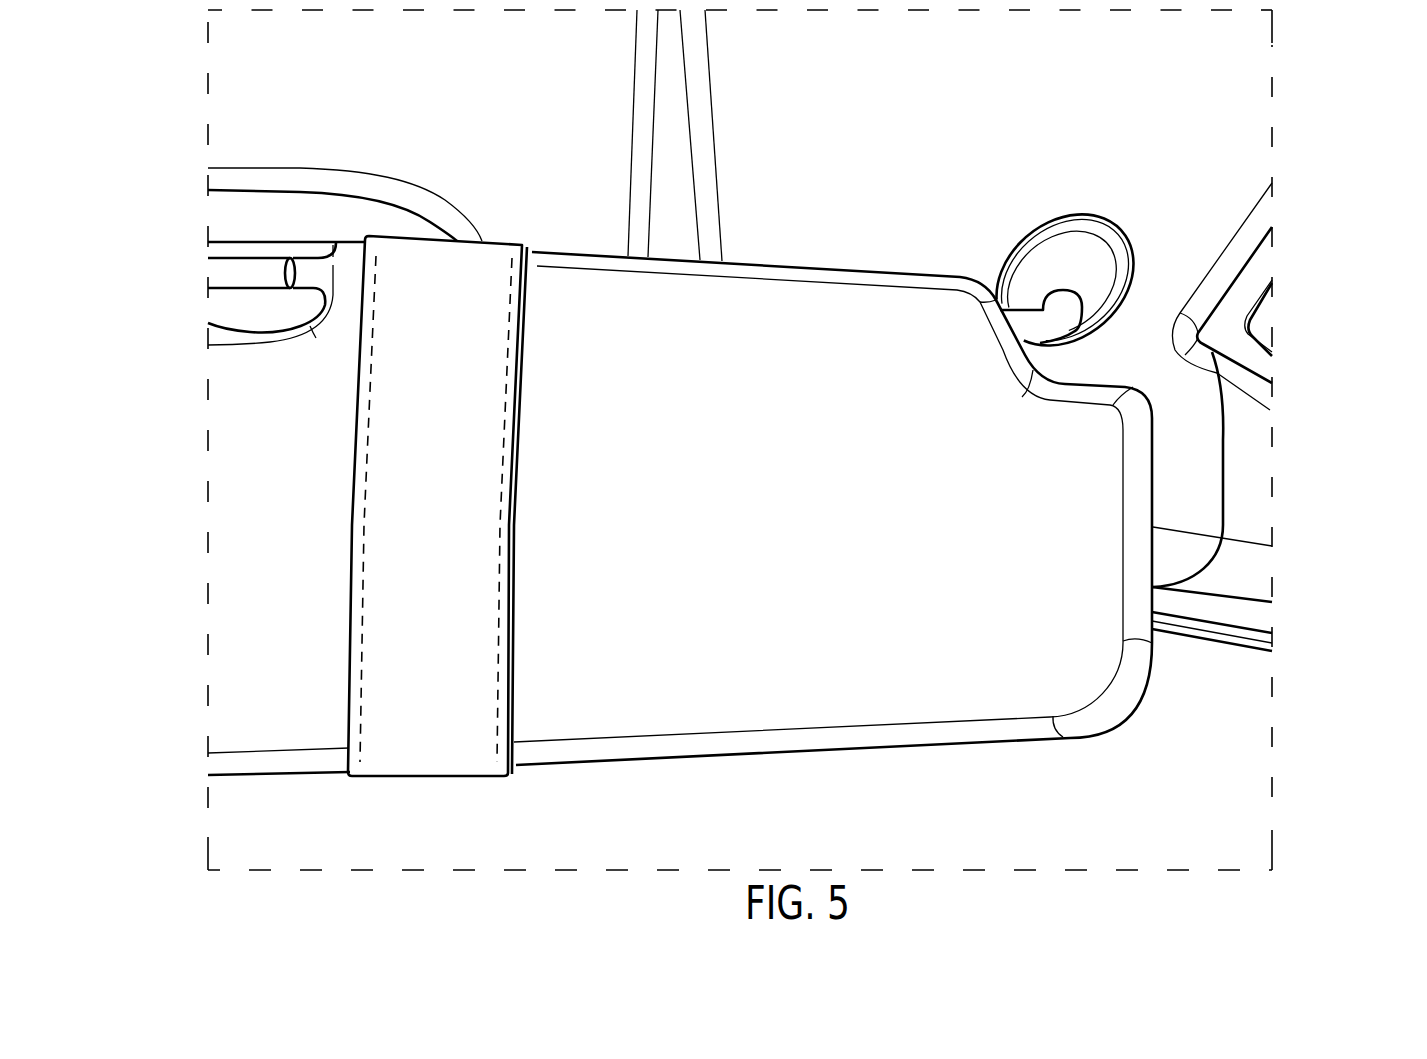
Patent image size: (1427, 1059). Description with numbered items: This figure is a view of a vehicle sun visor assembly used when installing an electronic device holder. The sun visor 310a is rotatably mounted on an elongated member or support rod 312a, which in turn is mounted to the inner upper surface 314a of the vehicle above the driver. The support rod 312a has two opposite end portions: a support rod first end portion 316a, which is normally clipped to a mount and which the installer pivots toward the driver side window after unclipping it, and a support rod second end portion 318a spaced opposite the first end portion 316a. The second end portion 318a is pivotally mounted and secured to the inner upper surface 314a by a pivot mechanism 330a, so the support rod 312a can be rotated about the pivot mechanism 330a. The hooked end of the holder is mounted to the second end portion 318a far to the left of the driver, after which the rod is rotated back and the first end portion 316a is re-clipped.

The sun visor 310a is at (768, 406).
The support rod 312a is at (734, 320).
The inner upper surface 314a is at (897, 161).
The support rod first end portion 316a is at (298, 247).
The support rod second end portion 318a is at (1037, 352).
The pivot mechanism 330a is at (1112, 215).